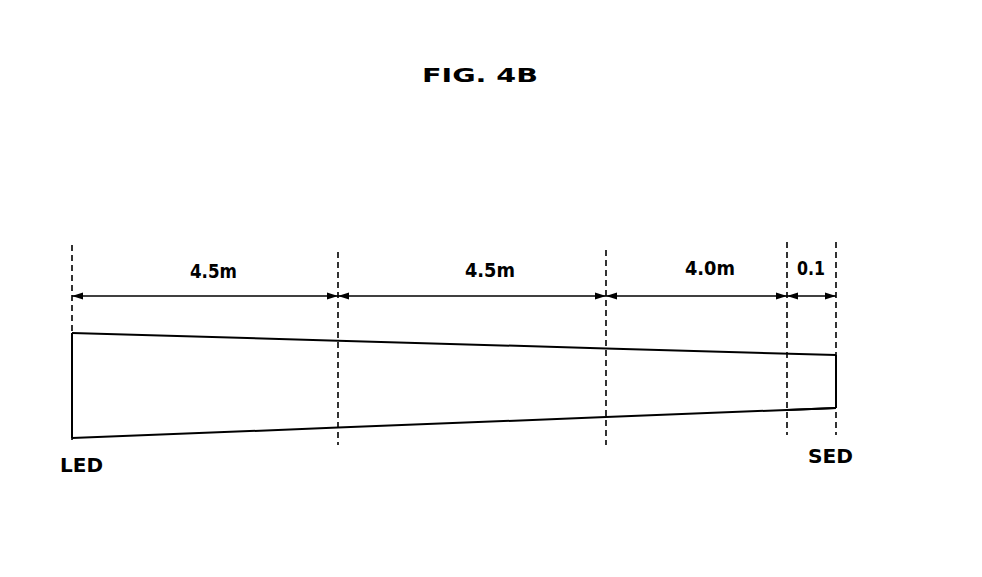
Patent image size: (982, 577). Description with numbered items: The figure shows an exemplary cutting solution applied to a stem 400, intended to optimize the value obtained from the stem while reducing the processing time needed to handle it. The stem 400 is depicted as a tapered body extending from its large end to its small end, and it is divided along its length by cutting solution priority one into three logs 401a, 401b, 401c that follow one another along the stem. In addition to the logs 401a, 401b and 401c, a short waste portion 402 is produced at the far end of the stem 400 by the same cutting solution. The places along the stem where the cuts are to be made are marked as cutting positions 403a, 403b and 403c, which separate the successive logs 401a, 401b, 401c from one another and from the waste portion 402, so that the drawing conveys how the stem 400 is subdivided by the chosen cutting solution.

The stem 400 is at (454, 426).
The log 401a is at (205, 385).
The log 401b is at (472, 384).
The log 401c is at (721, 382).
The waste portion 402 is at (817, 410).
The cutting position 403a is at (333, 318).
The cutting position 403b is at (602, 317).
The cutting position 403c is at (787, 312).